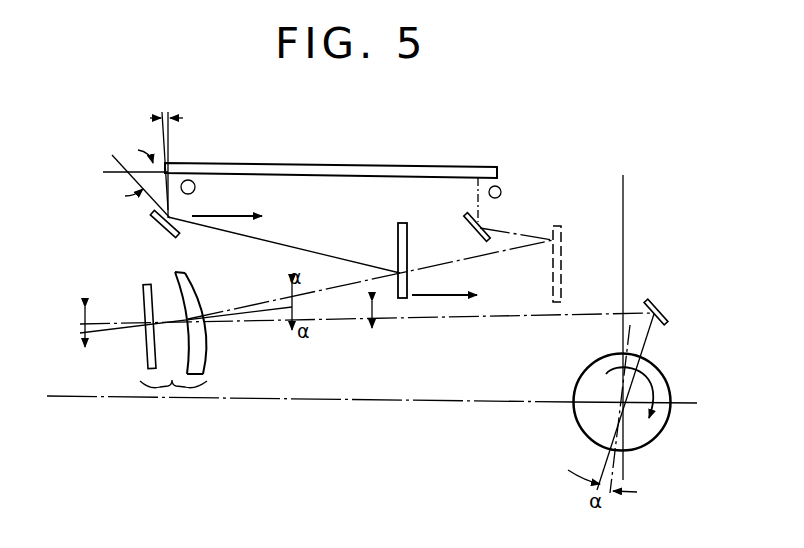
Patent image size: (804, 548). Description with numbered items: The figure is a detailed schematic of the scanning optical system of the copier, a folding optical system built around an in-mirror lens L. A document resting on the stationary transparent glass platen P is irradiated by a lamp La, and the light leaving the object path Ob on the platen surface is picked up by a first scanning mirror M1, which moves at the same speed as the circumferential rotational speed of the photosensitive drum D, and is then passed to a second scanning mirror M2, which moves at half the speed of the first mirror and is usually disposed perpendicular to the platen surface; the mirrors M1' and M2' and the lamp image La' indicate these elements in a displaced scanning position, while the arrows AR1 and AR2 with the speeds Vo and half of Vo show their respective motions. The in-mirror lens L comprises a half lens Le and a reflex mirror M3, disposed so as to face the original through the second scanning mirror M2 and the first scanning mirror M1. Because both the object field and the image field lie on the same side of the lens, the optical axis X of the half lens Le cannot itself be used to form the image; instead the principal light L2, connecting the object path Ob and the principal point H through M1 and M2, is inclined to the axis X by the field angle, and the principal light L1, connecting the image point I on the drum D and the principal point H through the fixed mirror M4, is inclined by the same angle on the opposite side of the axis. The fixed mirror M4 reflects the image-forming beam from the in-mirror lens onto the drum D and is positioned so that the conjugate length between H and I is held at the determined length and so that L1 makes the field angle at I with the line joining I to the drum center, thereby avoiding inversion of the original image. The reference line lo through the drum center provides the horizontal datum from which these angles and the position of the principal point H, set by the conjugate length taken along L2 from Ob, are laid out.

The platen P is at (388, 167).
The object path Ob is at (126, 170).
The first scanning mirror M1 is at (142, 224).
The lamp La is at (211, 161).
The first arm AR1 is at (227, 203).
The velocity Vo is at (279, 219).
The second scanning mirror M2 is at (372, 260).
The principal light l1 L1 is at (361, 283).
The optical axis of lens X is at (294, 306).
The principal light l2 L2 is at (590, 319).
The second arm AR2 is at (470, 291).
The first mirror image M1' is at (456, 210).
The laser source image La' is at (523, 190).
The second mirror image M2' is at (584, 264).
The fixed mirror M4 is at (667, 306).
The photosensitive drum D is at (669, 387).
The image point I is at (642, 360).
The reference axis lo is at (397, 400).
The reflex mirror M3 is at (150, 338).
The principal point H is at (154, 322).
The half lens Le is at (212, 338).
The in-mirror lens L is at (172, 383).